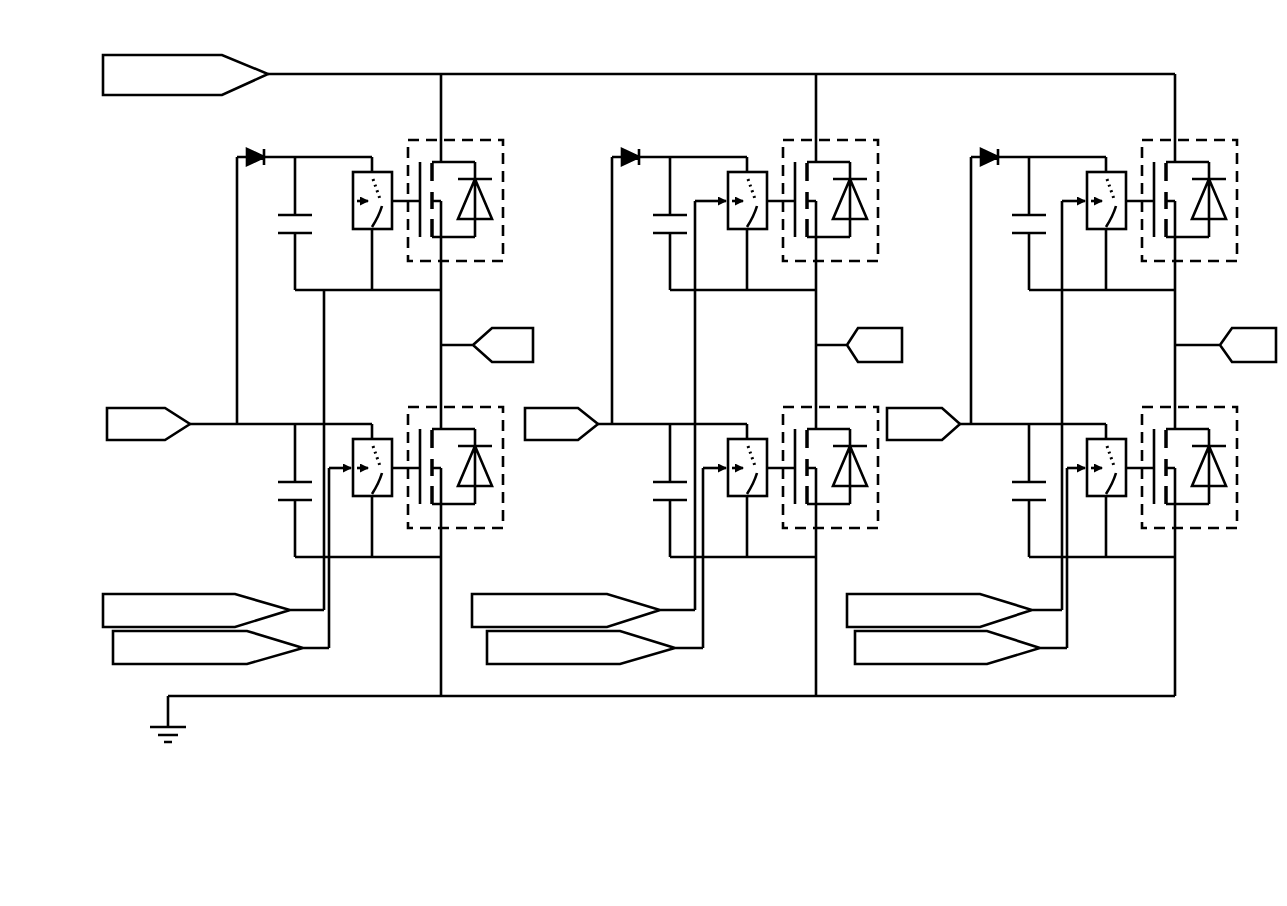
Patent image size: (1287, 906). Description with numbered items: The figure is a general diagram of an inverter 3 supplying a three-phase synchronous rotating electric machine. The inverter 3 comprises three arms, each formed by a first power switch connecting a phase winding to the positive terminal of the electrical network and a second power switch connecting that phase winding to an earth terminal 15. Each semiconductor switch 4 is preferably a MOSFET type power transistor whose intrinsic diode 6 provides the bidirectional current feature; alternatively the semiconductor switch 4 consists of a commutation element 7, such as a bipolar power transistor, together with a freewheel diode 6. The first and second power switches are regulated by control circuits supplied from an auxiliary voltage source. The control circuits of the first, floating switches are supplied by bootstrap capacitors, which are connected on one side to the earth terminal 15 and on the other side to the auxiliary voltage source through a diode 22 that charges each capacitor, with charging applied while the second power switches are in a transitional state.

The inverter 3 is at (1207, 61).
The semiconductor switch 4 is at (503, 176).
The intrinsic diode 6 is at (485, 222).
The commutation element 7 is at (430, 239).
The earth terminal 15 is at (166, 716).
The diode 22 is at (262, 150).